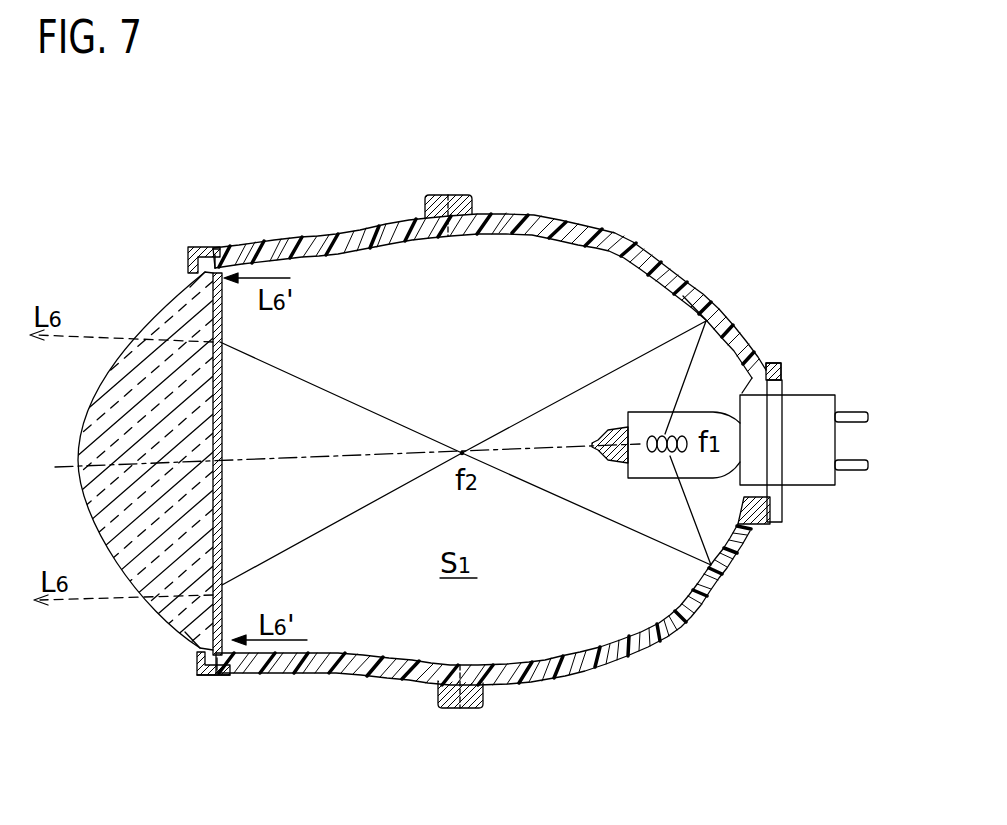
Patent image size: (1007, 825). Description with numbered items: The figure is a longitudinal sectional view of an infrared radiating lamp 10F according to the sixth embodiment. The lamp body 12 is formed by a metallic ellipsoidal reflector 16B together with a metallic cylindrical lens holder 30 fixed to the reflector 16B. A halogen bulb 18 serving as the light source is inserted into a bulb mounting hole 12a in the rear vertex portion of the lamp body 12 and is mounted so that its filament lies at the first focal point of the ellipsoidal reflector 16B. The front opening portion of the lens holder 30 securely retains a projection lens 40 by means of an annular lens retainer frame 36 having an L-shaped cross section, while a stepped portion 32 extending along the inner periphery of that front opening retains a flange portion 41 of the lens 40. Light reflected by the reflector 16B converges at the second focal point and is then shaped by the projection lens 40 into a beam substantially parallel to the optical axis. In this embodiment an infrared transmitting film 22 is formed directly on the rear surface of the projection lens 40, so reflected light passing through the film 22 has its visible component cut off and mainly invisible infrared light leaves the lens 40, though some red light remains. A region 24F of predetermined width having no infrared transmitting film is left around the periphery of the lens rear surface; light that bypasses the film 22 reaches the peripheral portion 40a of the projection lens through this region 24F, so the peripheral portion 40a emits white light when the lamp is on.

The infrared radiating lamp 10F is at (115, 272).
The lamp body 12 is at (593, 230).
The bulb mounting hole 12a is at (756, 485).
The metallic ellipsoidal reflector 16B is at (686, 289).
The halogen bulb 18 is at (708, 478).
The infrared transmitting film 22 is at (227, 428).
The region having no infrared transmitting film 24F is at (248, 250).
The cylindrical lens holder 30 is at (347, 230).
The stepped portion 32 is at (217, 247).
The annular lens retainer frame 36 is at (200, 247).
The projection lens 40 is at (83, 440).
The peripheral portion of the projection lens 40a is at (175, 297).
The flange portion 41 is at (203, 677).